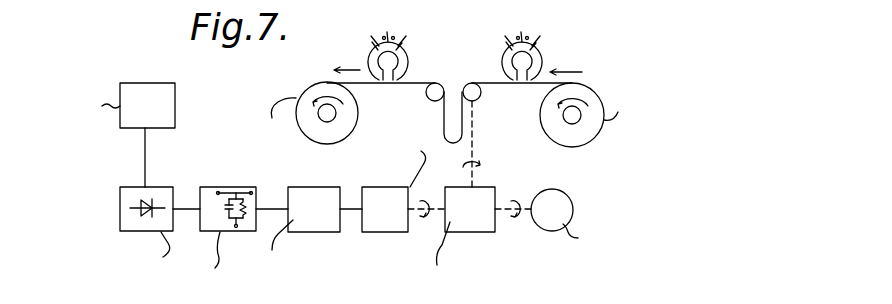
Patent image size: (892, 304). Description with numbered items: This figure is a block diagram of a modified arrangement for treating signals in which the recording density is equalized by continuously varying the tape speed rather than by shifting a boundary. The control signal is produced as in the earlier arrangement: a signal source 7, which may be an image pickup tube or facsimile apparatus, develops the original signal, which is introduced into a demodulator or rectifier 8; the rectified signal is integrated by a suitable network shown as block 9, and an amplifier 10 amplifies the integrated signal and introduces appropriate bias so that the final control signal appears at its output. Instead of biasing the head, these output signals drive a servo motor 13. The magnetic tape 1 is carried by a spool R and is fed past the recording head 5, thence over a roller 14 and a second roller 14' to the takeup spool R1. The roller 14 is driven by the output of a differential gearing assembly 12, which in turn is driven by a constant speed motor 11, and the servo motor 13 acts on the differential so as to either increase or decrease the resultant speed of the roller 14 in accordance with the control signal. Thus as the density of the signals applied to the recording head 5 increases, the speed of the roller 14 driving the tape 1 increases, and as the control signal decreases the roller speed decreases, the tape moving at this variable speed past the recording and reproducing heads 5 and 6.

The magnetic tape 1 is at (418, 82).
The recording head 5 is at (540, 52).
The reproducing head 6 is at (383, 44).
The signal source 7 is at (145, 83).
The demodulator or rectifier 8 is at (170, 187).
The integrating network 9 is at (231, 188).
The amplifier 10 is at (323, 174).
The constant speed motor 11 is at (573, 208).
The differential gearing assembly 12 is at (496, 188).
The servo motor 13 is at (403, 188).
The roller 14 is at (486, 99).
The second roller 14' is at (419, 102).
The spool R is at (583, 115).
The takeup spool R1 is at (310, 113).